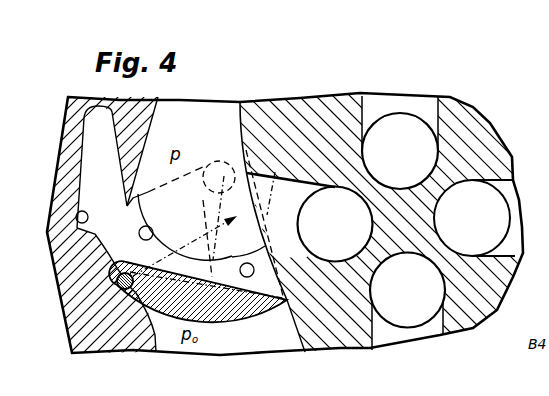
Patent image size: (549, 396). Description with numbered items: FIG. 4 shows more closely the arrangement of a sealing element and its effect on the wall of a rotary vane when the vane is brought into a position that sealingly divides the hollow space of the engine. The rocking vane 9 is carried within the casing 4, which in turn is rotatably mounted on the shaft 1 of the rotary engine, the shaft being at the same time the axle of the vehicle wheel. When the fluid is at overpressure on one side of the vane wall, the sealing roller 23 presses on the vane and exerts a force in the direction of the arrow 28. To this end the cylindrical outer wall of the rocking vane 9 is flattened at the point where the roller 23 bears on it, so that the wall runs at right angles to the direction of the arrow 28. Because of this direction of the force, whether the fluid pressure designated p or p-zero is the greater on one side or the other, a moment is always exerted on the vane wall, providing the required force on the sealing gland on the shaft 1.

The shaft 1 is at (333, 320).
The casing 4 is at (122, 340).
The rocking vane 9 is at (233, 308).
The sealing roller 23 is at (118, 284).
The arrow 28 is at (193, 240).